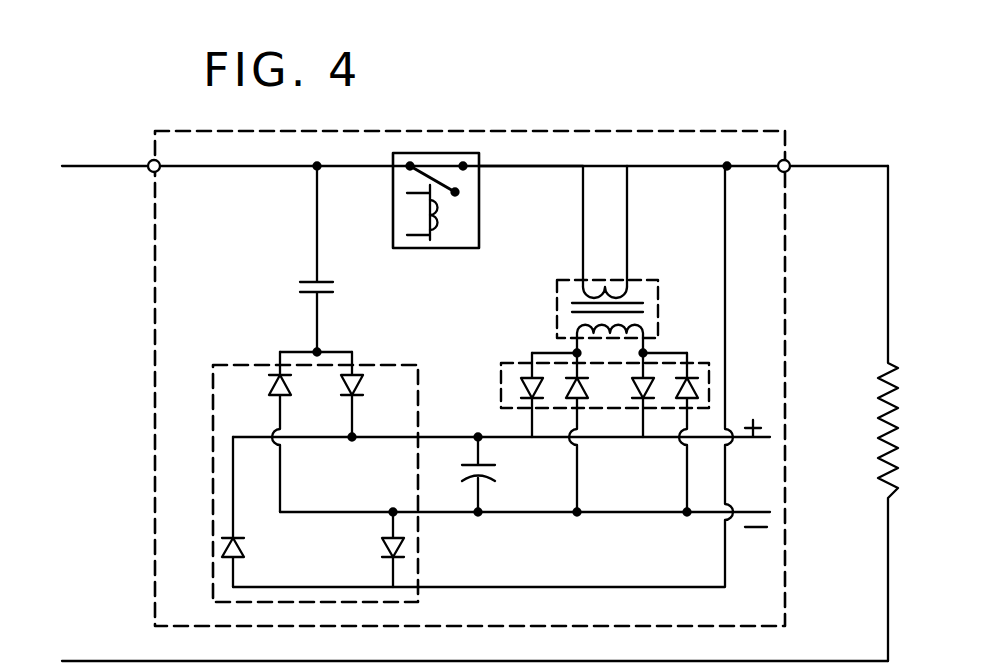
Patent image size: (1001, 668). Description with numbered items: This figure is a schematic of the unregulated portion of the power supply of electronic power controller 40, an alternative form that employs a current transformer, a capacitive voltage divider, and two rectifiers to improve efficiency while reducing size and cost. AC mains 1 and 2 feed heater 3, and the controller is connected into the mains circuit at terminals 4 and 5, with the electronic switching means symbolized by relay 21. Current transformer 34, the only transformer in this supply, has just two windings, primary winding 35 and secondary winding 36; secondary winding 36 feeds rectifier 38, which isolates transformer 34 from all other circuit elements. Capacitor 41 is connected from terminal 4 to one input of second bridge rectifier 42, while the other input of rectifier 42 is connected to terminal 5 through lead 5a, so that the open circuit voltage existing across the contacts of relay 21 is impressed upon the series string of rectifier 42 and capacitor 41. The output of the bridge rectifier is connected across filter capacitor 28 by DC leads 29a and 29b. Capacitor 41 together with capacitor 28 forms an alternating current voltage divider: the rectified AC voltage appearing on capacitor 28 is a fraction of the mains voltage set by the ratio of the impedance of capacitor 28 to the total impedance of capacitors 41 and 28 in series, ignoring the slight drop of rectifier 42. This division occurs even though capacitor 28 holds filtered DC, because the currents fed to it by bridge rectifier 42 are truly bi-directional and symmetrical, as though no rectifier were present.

The AC mains 1 is at (103, 163).
The AC mains 2 is at (102, 660).
The heater 3 is at (878, 420).
The terminal 4 is at (150, 172).
The terminal 5 is at (790, 162).
The lead 5a is at (568, 587).
The relay 21 is at (479, 205).
The filter capacitor 28 is at (483, 477).
The DC lead 29a is at (663, 442).
The DC lead 29b is at (667, 517).
The current transformer 34 is at (599, 309).
The primary winding 35 is at (627, 292).
The secondary winding 36 is at (648, 330).
The rectifier 38 is at (500, 383).
The electronic power controller 40 is at (154, 402).
The capacitor 41 is at (323, 293).
The second bridge rectifier 42 is at (247, 365).